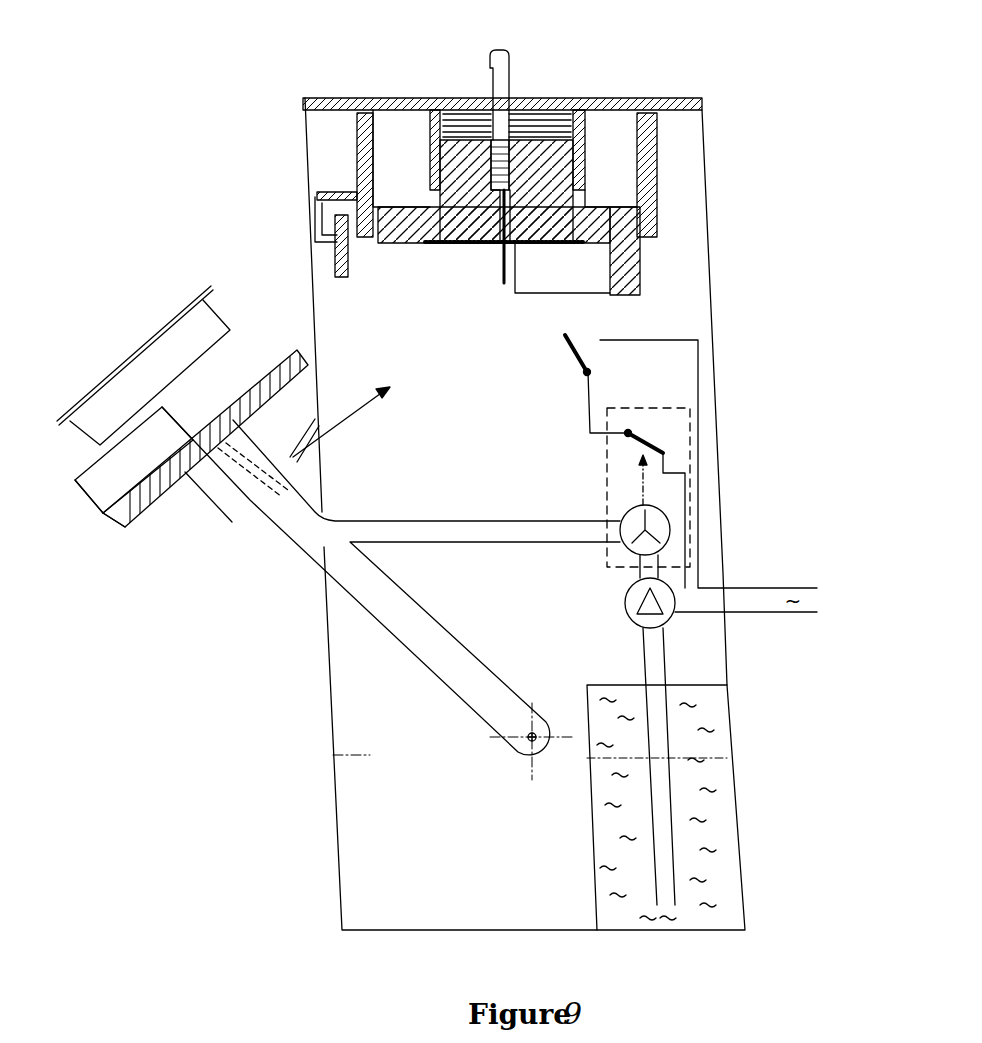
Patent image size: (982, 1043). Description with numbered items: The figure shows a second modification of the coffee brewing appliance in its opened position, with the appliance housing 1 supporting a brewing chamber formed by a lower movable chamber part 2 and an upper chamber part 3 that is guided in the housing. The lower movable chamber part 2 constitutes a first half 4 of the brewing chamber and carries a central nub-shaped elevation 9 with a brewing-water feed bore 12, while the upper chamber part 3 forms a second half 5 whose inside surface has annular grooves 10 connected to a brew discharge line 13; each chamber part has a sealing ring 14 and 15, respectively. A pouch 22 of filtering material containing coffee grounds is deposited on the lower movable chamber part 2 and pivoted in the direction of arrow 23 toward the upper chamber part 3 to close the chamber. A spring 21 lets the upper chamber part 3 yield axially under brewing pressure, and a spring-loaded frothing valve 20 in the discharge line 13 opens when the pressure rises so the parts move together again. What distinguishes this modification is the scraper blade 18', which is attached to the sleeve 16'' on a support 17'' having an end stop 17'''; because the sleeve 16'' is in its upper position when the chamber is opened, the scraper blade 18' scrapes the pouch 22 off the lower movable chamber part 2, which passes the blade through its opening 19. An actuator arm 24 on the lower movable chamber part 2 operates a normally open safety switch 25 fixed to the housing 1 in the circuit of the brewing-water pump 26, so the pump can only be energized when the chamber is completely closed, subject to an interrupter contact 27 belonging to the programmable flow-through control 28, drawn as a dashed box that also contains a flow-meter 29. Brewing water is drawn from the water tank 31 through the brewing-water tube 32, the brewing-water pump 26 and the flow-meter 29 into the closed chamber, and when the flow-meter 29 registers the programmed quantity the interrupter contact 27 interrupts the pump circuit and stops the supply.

The appliance housing 1 is at (650, 98).
The lower movable chamber part 2 is at (160, 487).
The upper chamber part 3 is at (640, 255).
The first half of the brewing chamber 4 is at (112, 500).
The second half of the brewing chamber 5 is at (640, 292).
The central nub-shaped elevation 9 is at (207, 413).
The annular grooves 10 is at (447, 245).
The brewing-water feed bore 12 is at (223, 473).
The brew discharge line 13 is at (500, 245).
The sealing ring 14 is at (120, 524).
The sealing ring 15 is at (657, 223).
The sleeve 16'' is at (744, 172).
The support 17'' is at (244, 161).
The end stop 17''' is at (285, 217).
The scraper blade 18' is at (242, 227).
The opening 19 is at (93, 487).
The spring-loaded frothing valve 20 is at (435, 140).
The spring 21 is at (428, 98).
The pouch 22 is at (158, 366).
The arrow 23 is at (341, 422).
The actuator arm 24 is at (312, 431).
The safety switch 25 is at (573, 355).
The brewing-water pump 26 is at (670, 620).
The interrupter contact 27 is at (660, 428).
The programmable flow-through control 28 is at (615, 562).
The flow-meter 29 is at (663, 528).
The water tank 31 is at (717, 723).
The brewing-water tube 32 is at (660, 840).